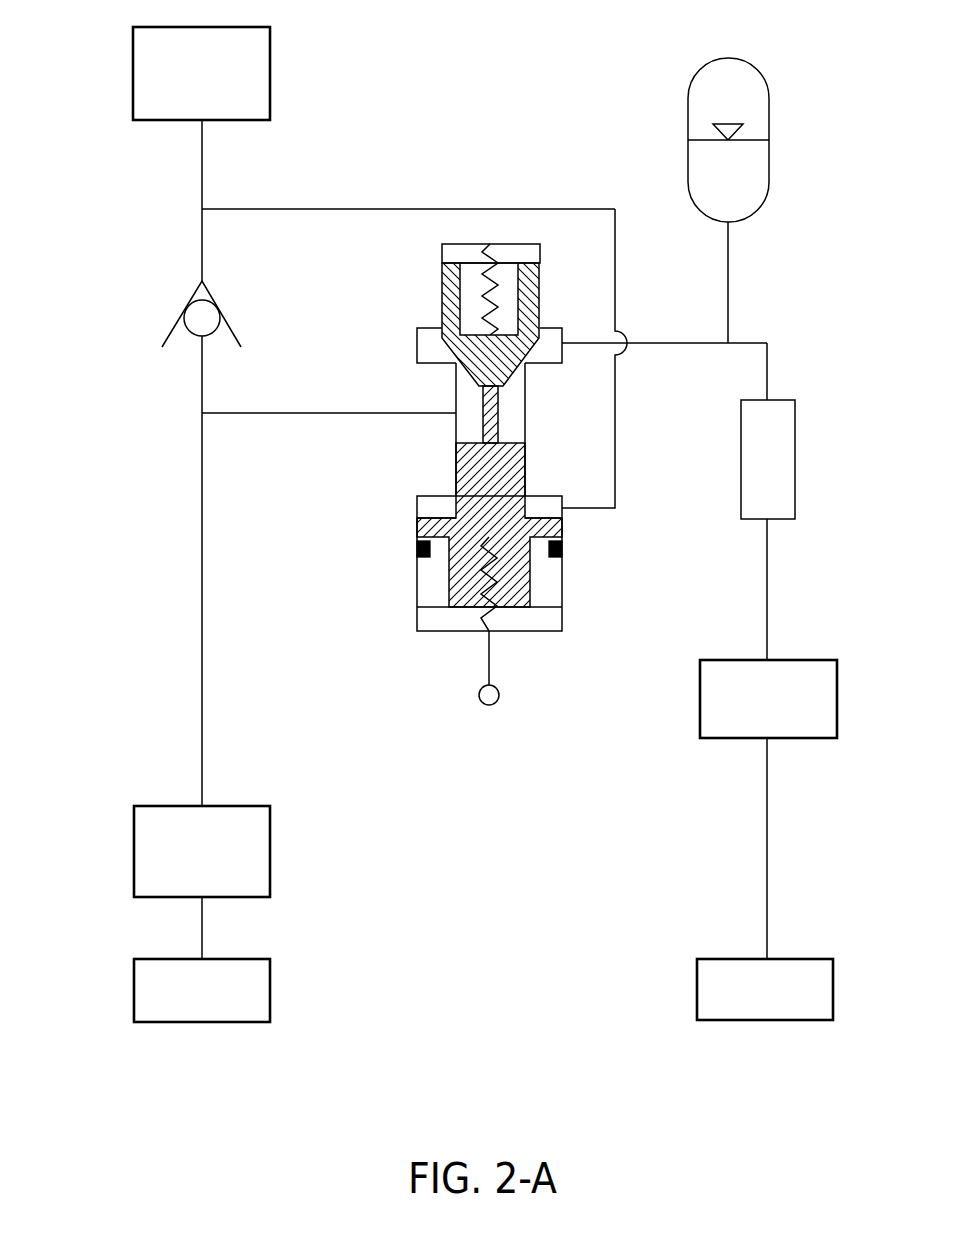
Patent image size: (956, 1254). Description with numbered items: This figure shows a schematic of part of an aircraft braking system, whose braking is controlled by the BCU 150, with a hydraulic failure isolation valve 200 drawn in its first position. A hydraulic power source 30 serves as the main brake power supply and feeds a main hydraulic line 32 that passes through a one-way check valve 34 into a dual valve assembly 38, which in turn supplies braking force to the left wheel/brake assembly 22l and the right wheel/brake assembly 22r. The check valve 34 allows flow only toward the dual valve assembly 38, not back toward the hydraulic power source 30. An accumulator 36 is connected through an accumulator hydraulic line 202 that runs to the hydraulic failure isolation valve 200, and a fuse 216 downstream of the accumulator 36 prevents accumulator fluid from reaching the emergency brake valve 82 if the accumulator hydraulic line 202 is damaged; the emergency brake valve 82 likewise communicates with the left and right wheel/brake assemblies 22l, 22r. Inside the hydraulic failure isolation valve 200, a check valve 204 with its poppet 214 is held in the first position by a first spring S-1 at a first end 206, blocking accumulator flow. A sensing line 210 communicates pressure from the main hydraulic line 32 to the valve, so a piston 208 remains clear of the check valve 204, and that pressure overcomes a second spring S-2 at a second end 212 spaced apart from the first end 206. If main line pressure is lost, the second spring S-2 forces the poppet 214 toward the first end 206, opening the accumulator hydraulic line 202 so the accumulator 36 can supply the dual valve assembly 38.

The hydraulic power source 30 is at (133, 93).
The main hydraulic line 32 is at (202, 490).
The check valve 34 is at (184, 316).
The accumulator 36 is at (769, 108).
The dual valve assembly 38 is at (134, 853).
The emergency brake valve 82 is at (768, 699).
The BCU 150 is at (508, 87).
The hydraulic failure isolation valve 200 is at (405, 657).
The accumulator hydraulic line 202 is at (300, 413).
The check valve 204 is at (540, 275).
The first end 206 is at (522, 244).
The piston 208 is at (525, 457).
The sensing line 210 is at (365, 209).
The second end 212 is at (543, 632).
The poppet 214 is at (527, 364).
The fuse 216 is at (741, 486).
The first spring S-1 is at (478, 293).
The second spring S-2 is at (490, 566).
The left wheel/brake assembly 22l is at (202, 990).
The right wheel/brake assembly 22r is at (765, 989).